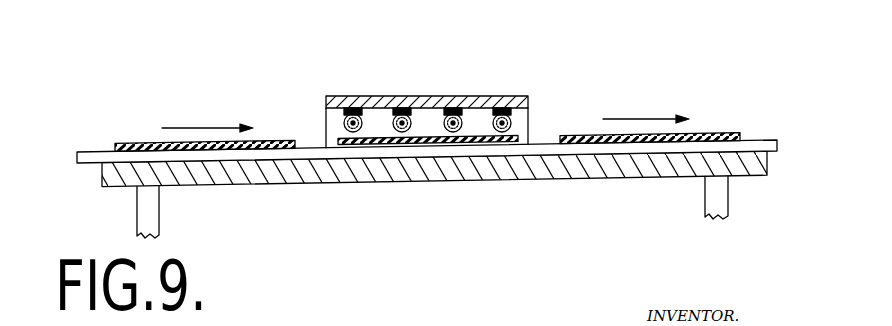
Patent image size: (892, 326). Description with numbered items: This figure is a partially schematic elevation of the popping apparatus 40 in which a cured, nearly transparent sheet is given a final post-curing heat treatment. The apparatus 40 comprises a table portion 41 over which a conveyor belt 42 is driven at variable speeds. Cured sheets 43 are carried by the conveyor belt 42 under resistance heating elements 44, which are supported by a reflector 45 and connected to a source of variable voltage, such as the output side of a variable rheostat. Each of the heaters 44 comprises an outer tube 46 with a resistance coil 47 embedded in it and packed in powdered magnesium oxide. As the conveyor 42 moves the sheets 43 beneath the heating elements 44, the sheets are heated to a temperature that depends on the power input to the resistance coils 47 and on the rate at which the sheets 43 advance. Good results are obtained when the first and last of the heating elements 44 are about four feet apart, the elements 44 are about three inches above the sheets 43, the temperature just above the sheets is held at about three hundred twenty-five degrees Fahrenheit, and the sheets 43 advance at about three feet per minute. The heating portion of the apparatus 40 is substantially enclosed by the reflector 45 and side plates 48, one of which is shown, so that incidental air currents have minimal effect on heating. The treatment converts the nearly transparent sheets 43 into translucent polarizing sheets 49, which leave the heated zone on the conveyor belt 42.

The popping apparatus 40 is at (420, 189).
The table portion 41 is at (545, 181).
The conveyor belt 42 is at (77, 165).
The cured sheet 43 is at (258, 140).
The resistance heating element 44 is at (477, 94).
The reflector 45 is at (528, 100).
The outer tube 46 is at (511, 118).
The resistance coil 47 is at (511, 123).
The side plate 48 is at (510, 112).
The translucent polarizing sheet 49 is at (714, 133).